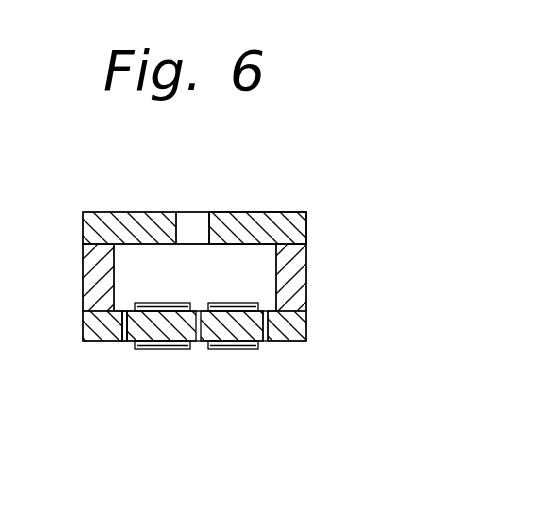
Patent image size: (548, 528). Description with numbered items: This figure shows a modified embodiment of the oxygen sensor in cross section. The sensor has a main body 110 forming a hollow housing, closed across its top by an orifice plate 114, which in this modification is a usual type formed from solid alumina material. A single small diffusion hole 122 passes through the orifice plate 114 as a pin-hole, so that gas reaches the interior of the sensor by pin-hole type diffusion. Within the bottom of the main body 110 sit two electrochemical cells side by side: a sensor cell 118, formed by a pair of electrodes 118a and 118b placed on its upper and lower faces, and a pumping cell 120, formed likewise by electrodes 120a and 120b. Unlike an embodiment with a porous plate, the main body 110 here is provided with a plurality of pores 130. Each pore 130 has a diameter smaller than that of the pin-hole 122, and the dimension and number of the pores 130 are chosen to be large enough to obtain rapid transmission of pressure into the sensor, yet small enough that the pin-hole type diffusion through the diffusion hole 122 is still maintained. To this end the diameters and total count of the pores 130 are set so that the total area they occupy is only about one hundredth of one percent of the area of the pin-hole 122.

The main body 110 is at (290, 333).
The orifice plate 114 is at (258, 218).
The diffusion hole 122 is at (192, 218).
The pores 130 is at (123, 341).
The sensor cell 118 is at (187, 368).
The electrode 118a is at (170, 349).
The electrode 118b is at (164, 300).
The pumping cell 120 is at (302, 369).
The electrode 120a is at (252, 349).
The electrode 120b is at (222, 303).